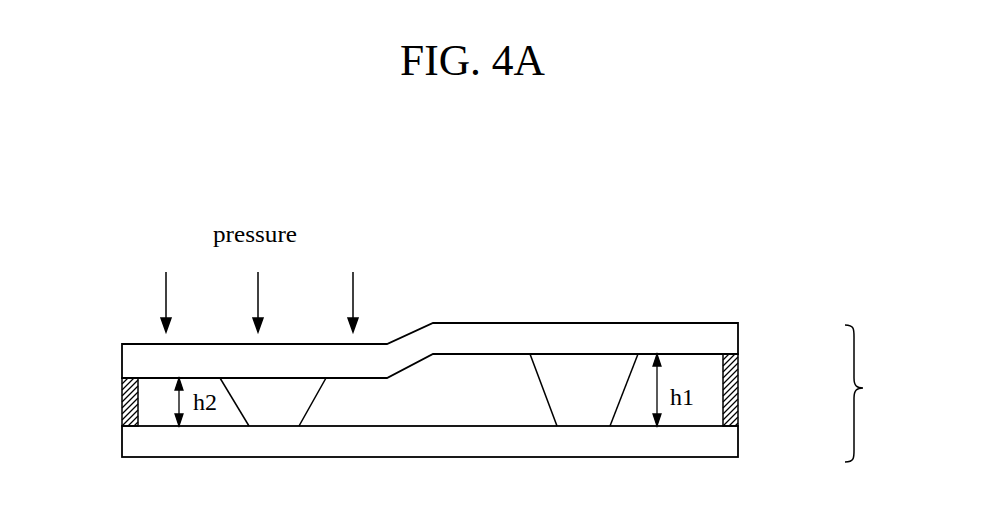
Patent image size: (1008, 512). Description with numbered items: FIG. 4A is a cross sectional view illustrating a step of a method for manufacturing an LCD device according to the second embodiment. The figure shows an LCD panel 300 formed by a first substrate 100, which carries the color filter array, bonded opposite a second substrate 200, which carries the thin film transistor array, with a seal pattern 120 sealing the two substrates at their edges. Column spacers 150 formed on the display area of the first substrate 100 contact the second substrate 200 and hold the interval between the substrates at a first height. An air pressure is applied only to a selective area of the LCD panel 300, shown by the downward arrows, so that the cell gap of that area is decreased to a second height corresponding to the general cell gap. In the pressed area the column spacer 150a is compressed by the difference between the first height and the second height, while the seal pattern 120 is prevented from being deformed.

The first substrate 100 is at (738, 335).
The seal pattern 120 is at (128, 400).
The column spacer 150 is at (552, 392).
The pressed column spacer 150a is at (305, 403).
The second substrate 200 is at (738, 444).
The LCD panel 300 is at (881, 393).